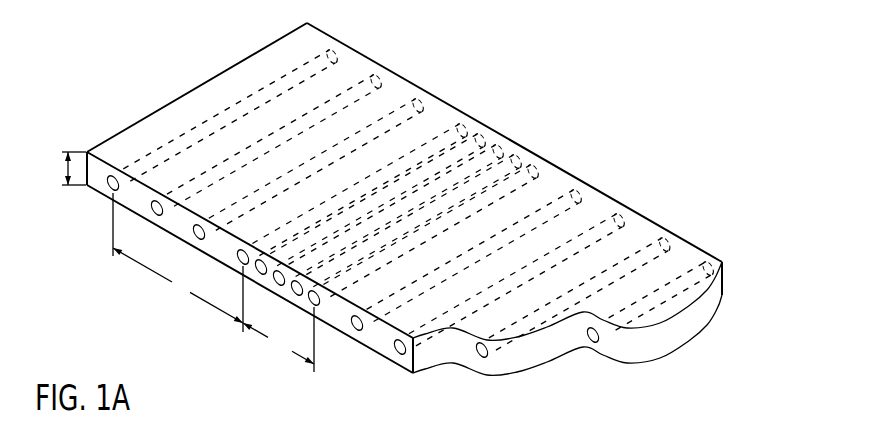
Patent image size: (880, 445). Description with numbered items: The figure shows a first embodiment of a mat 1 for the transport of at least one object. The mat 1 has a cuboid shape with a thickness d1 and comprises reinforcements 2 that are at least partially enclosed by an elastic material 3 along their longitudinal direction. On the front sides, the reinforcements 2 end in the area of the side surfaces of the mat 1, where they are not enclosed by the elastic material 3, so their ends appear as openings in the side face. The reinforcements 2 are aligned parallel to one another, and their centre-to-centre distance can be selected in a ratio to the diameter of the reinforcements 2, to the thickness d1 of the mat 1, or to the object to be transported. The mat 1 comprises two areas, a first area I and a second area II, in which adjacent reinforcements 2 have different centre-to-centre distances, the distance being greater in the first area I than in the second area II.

The mat 1 is at (579, 98).
The reinforcements 2 is at (357, 88).
The elastic material 3 is at (404, 96).
The thickness d1 is at (60, 168).
The first area I is at (178, 262).
The second area II is at (278, 339).